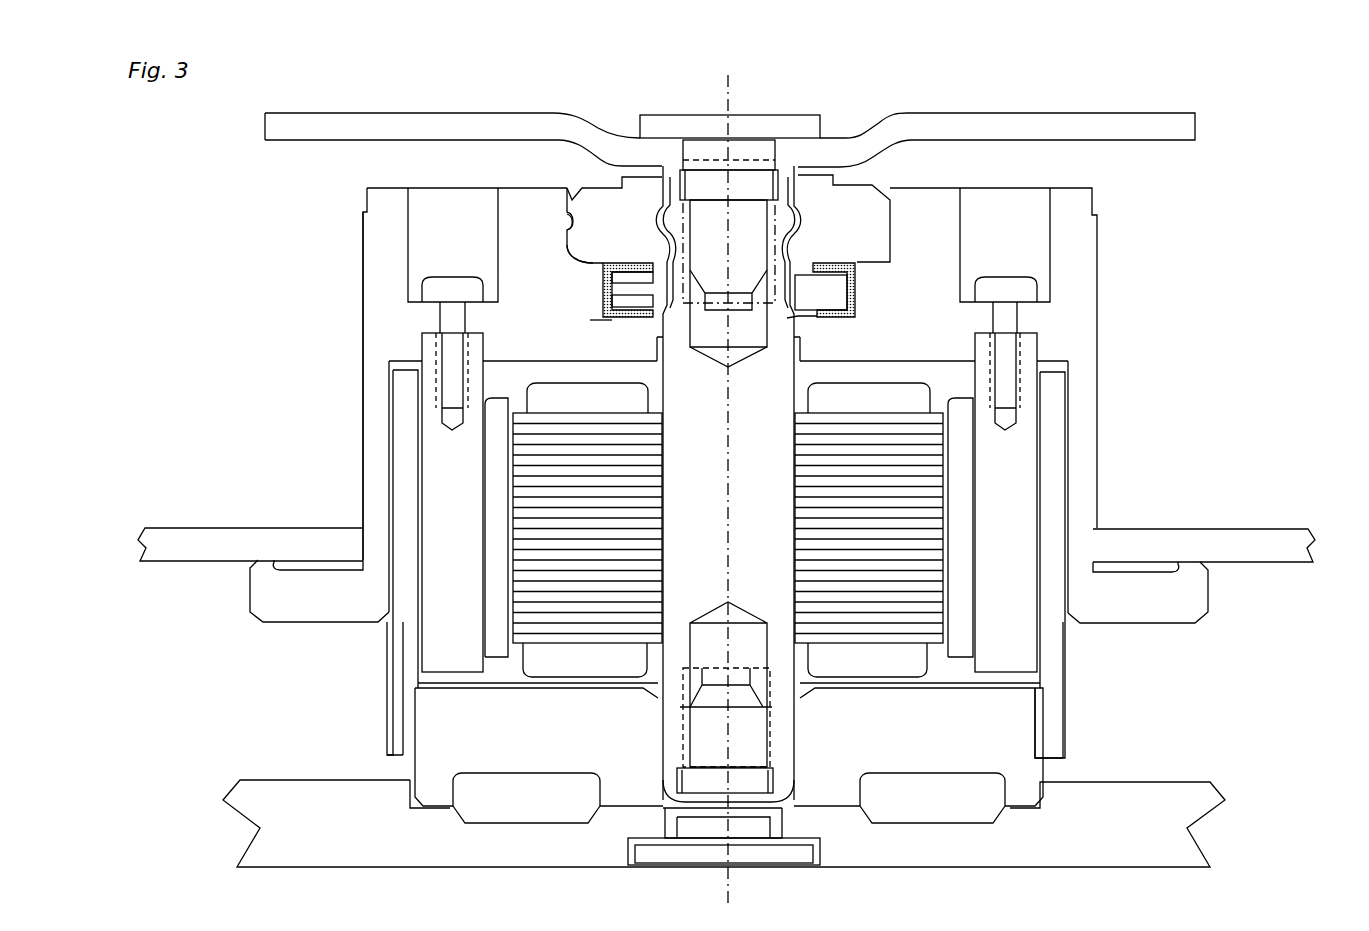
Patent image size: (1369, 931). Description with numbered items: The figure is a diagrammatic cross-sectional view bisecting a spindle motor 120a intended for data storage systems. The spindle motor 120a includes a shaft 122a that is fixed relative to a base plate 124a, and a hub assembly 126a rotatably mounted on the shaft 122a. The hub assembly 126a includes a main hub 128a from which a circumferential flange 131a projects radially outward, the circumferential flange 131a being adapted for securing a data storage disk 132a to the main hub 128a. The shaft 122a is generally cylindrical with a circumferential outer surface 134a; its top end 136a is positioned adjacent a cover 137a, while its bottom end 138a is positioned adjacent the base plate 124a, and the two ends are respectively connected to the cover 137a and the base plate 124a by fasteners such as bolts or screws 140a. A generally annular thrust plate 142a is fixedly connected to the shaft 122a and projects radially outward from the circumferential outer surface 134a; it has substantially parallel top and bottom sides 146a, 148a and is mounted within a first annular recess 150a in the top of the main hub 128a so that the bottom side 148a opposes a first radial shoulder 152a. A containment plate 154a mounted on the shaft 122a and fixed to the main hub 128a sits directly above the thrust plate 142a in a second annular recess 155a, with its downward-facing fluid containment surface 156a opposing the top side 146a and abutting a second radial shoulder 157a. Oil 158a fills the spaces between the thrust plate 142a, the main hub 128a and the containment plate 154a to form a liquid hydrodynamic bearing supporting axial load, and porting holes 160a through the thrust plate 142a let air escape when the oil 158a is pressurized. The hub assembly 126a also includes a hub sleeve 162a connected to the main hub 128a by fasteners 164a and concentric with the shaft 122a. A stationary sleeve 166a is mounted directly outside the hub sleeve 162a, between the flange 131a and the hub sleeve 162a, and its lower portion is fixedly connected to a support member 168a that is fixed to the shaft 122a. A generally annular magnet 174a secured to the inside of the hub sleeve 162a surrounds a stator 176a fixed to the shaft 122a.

The spindle motor 120a is at (218, 384).
The shaft 122a is at (802, 373).
The base plate 124a is at (927, 868).
The hub assembly 126a is at (350, 202).
The main hub 128a is at (362, 322).
The circumferential flange 131a is at (292, 622).
The data storage disk 132a is at (210, 560).
The circumferential outer surface 134a is at (797, 391).
The top end 136a is at (800, 170).
The cover 137a is at (1040, 113).
The bottom end 138a is at (793, 780).
The bolts or screws 140a is at (784, 113).
The thrust plate 142a is at (812, 305).
The top side 146a is at (823, 262).
The bottom side 148a is at (817, 317).
The first annular recess 150a is at (600, 318).
The first radial shoulder 152a is at (837, 308).
The containment plate 154a is at (578, 188).
The second annular recess 155a is at (566, 224).
The fluid containment surface 156a is at (607, 266).
The second radial shoulder 157a is at (572, 262).
The oil 158a is at (603, 300).
The porting holes 160a is at (660, 273).
The hub sleeve 162a is at (1013, 675).
The fasteners 164a is at (420, 286).
The stationary sleeve 166a is at (387, 718).
The support member 168a is at (543, 773).
The magnet 174a is at (967, 610).
The stator 176a is at (928, 648).